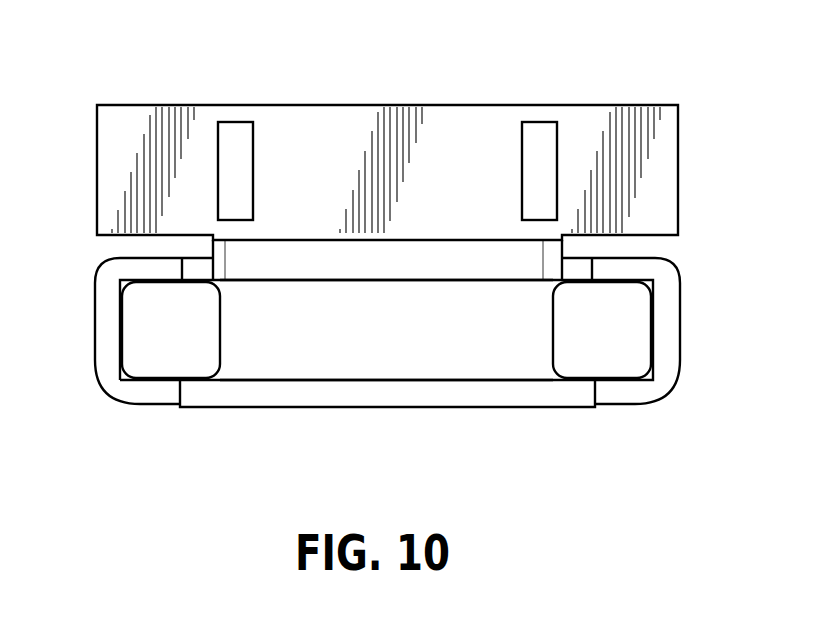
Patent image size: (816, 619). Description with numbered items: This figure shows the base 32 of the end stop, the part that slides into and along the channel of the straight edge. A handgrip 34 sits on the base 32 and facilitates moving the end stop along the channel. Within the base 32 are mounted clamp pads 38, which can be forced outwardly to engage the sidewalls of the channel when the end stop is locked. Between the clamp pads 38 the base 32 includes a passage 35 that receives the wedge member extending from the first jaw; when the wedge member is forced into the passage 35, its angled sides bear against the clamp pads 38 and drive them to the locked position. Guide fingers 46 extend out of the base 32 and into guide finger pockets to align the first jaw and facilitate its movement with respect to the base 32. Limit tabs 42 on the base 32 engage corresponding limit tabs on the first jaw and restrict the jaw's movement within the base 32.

The handgrip 34 is at (662, 142).
The guide fingers 46 is at (232, 128).
The base 32 is at (105, 348).
The clamp pads 38 is at (138, 322).
The passage 35 is at (440, 365).
The limit tabs 42 is at (180, 390).